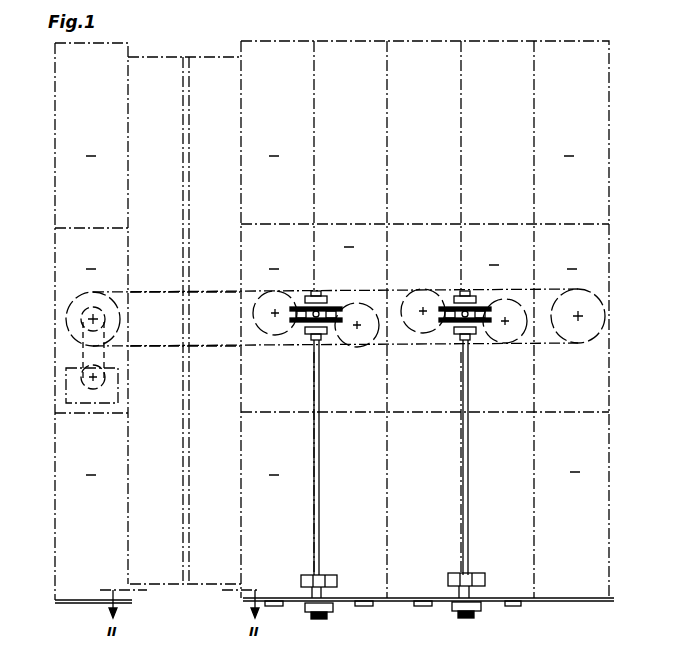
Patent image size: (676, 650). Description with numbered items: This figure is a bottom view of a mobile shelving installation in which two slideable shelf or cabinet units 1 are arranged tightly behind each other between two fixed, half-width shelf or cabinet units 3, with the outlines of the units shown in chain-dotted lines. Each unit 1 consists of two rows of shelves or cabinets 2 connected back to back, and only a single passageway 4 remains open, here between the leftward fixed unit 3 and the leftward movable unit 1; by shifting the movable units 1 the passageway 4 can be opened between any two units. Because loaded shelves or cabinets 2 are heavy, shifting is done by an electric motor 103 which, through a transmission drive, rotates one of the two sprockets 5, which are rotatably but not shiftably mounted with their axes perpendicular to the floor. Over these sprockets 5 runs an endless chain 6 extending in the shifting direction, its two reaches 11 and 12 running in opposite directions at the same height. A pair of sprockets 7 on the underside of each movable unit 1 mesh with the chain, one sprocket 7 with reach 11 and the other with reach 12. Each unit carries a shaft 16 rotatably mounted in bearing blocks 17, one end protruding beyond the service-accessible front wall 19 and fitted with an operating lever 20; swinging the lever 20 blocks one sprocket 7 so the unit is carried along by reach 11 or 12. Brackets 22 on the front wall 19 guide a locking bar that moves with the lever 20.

The slideable shelf or cabinet unit 1 is at (421, 248).
The shelves or cabinets 2 is at (333, 308).
The fixed half-width shelf or cabinet unit 3 is at (55, 254).
The passageway 4 is at (241, 117).
The sprockets 5 is at (85, 325).
The endless chain 6 is at (213, 347).
The sprockets 7 is at (269, 332).
The chain reach 11 is at (150, 290).
The chain reach 12 is at (161, 348).
The shaft 16 is at (319, 465).
The bearing blocks 17 is at (321, 297).
The front wall 19 is at (383, 606).
The operating lever 20 is at (310, 613).
The brackets 22 is at (273, 596).
The electric motor 103 is at (80, 383).